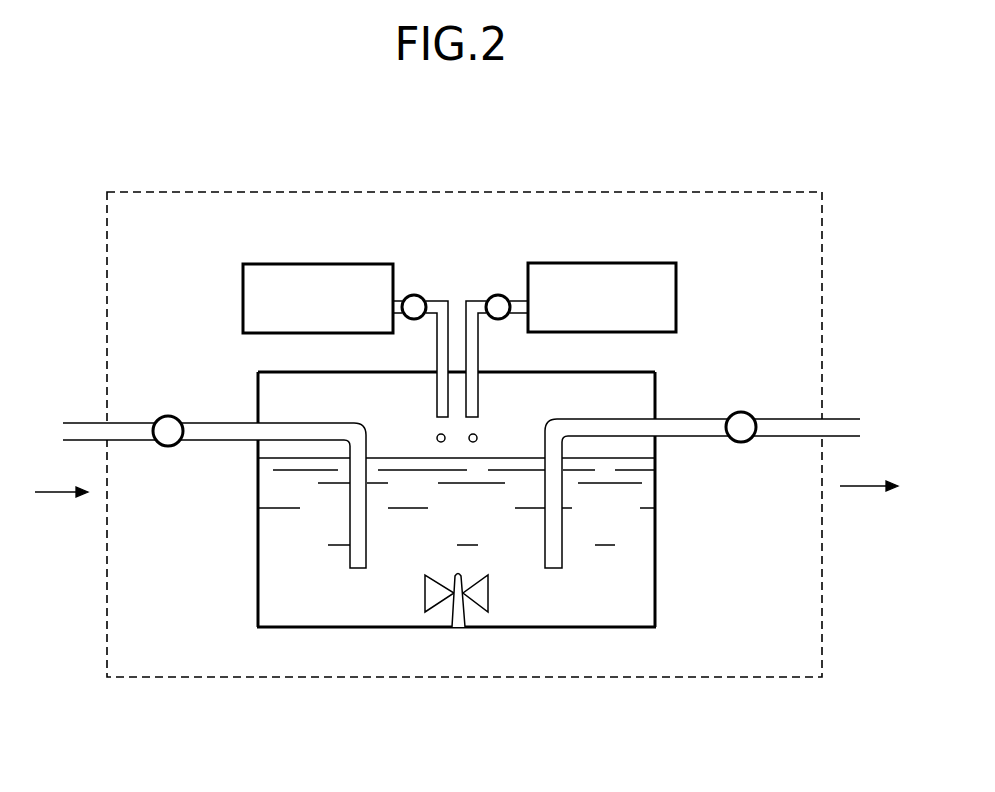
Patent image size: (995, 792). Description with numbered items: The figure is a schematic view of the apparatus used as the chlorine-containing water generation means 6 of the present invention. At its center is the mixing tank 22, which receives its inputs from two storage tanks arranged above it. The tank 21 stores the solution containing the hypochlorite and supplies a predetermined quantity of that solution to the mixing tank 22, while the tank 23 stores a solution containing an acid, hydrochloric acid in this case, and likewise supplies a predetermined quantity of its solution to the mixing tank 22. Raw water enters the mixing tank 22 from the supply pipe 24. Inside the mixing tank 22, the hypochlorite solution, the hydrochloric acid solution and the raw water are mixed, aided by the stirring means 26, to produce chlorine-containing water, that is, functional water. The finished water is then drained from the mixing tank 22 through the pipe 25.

The chlorine-containing water generation means 6 is at (852, 308).
The tank 21 is at (250, 314).
The mixing tank 22 is at (643, 572).
The tank 23 is at (663, 282).
The supply pipe 24 is at (168, 446).
The pipe 25 is at (837, 418).
The stirring means 26 is at (458, 628).